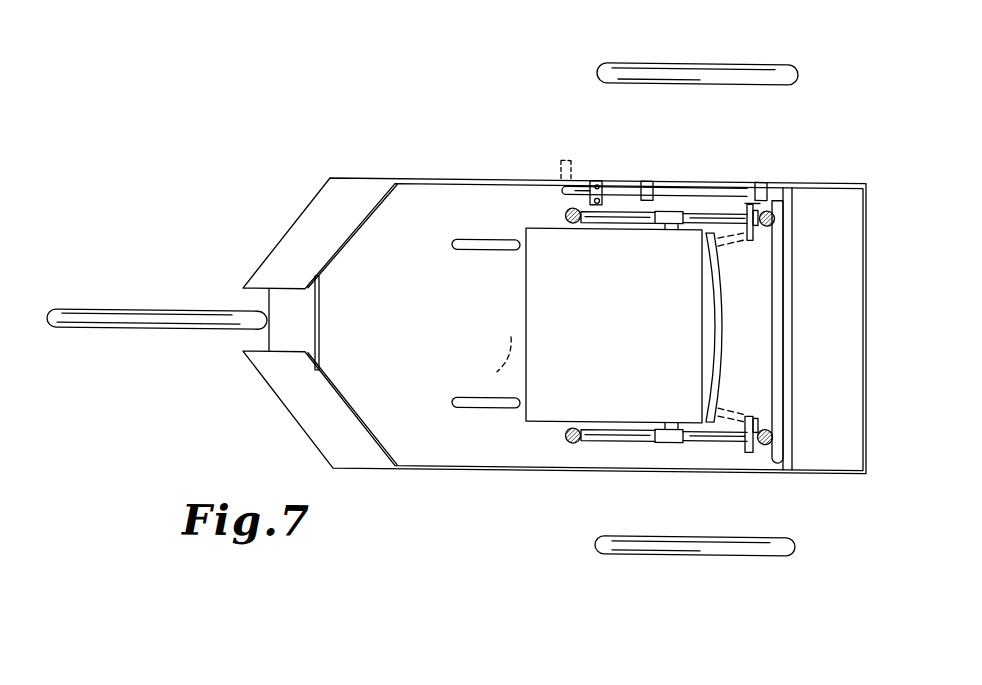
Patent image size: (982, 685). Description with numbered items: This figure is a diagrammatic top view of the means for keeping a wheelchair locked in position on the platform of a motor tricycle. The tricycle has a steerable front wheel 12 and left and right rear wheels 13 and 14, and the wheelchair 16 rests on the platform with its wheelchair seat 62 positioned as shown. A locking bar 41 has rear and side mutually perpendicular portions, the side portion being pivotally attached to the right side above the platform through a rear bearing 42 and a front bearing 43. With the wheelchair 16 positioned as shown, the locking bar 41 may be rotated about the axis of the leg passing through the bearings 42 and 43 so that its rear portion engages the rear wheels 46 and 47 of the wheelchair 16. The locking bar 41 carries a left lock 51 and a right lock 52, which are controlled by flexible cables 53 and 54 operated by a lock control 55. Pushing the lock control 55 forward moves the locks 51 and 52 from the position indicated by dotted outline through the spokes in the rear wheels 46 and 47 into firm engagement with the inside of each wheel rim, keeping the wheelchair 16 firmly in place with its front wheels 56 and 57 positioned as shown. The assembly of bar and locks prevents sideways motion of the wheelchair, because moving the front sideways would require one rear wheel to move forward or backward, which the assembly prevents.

The steerable front wheel 12 is at (135, 315).
The left rear wheel 13 is at (683, 541).
The right rear wheel 14 is at (783, 70).
The wheelchair 16 is at (497, 301).
The locking bar 41 is at (778, 286).
The rear bearing 42 is at (758, 188).
The front bearing 43 is at (647, 180).
The rear wheel 46 is at (647, 395).
The rear wheel 47 is at (630, 221).
The left lock 51 is at (745, 448).
The right lock 52 is at (746, 200).
The flexible cable 53 is at (750, 426).
The flexible cable 54 is at (748, 226).
The lock control 55 is at (598, 177).
The front wheel 56 is at (490, 405).
The front wheel 57 is at (479, 241).
The wheelchair seat 62 is at (627, 315).